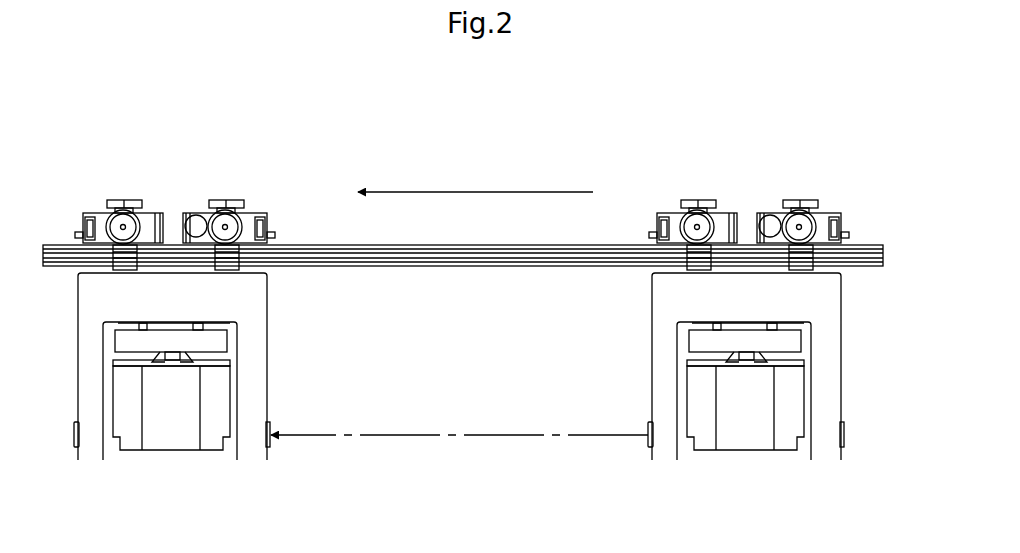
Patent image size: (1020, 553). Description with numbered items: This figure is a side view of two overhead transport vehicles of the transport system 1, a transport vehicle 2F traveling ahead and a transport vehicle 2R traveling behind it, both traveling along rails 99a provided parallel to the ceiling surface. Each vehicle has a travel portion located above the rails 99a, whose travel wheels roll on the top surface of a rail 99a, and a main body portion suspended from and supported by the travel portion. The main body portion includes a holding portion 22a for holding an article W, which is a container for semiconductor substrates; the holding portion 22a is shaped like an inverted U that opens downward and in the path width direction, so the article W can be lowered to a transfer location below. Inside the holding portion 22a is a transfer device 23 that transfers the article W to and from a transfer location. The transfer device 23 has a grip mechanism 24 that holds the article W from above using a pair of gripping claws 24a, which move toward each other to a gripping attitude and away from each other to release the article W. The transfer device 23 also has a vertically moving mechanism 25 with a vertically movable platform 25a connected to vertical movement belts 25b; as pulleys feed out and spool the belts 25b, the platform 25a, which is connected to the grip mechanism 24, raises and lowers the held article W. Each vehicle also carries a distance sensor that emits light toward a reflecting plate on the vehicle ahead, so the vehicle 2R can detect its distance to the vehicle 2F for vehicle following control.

The transport system 1 is at (797, 93).
The transport vehicle traveling ahead 2F is at (180, 127).
The transport vehicle traveling behind 2R is at (763, 142).
The rails 99a is at (305, 210).
The holding portion 22a is at (252, 298).
The transfer device 23 is at (820, 352).
The grip mechanism 24 is at (778, 348).
The gripping claws 24a is at (757, 367).
The vertically moving mechanism 25 is at (810, 315).
The vertically movable platform 25a is at (700, 343).
The vertical movement belts 25b is at (773, 325).
The article W is at (130, 445).